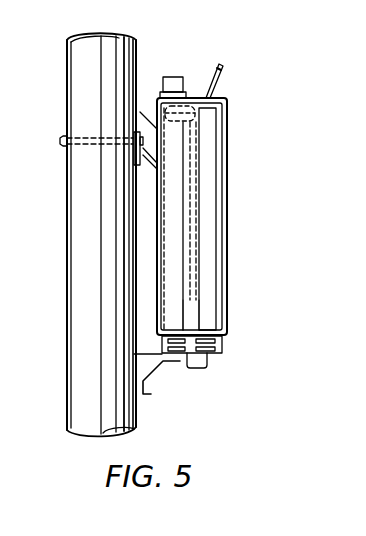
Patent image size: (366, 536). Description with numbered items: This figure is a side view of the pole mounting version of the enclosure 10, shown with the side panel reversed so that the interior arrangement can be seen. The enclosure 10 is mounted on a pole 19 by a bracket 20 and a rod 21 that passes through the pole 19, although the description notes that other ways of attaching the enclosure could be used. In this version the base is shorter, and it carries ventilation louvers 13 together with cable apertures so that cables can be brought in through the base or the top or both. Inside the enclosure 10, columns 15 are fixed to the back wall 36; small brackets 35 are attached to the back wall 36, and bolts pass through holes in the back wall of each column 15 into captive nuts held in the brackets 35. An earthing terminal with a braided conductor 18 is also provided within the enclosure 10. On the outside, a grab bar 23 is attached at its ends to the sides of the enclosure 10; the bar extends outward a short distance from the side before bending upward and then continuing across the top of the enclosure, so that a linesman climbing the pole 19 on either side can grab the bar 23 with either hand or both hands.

The enclosure 10 is at (232, 103).
The ventilation louvers 13 is at (220, 350).
The columns 15 is at (175, 241).
The earthing terminal and braided conductor 18 is at (160, 337).
The pole 19 is at (137, 47).
The bracket 20 is at (147, 372).
The rod 21 is at (100, 142).
The grab bar 23 is at (230, 63).
The small brackets 35 is at (140, 125).
The back wall 36 is at (160, 203).